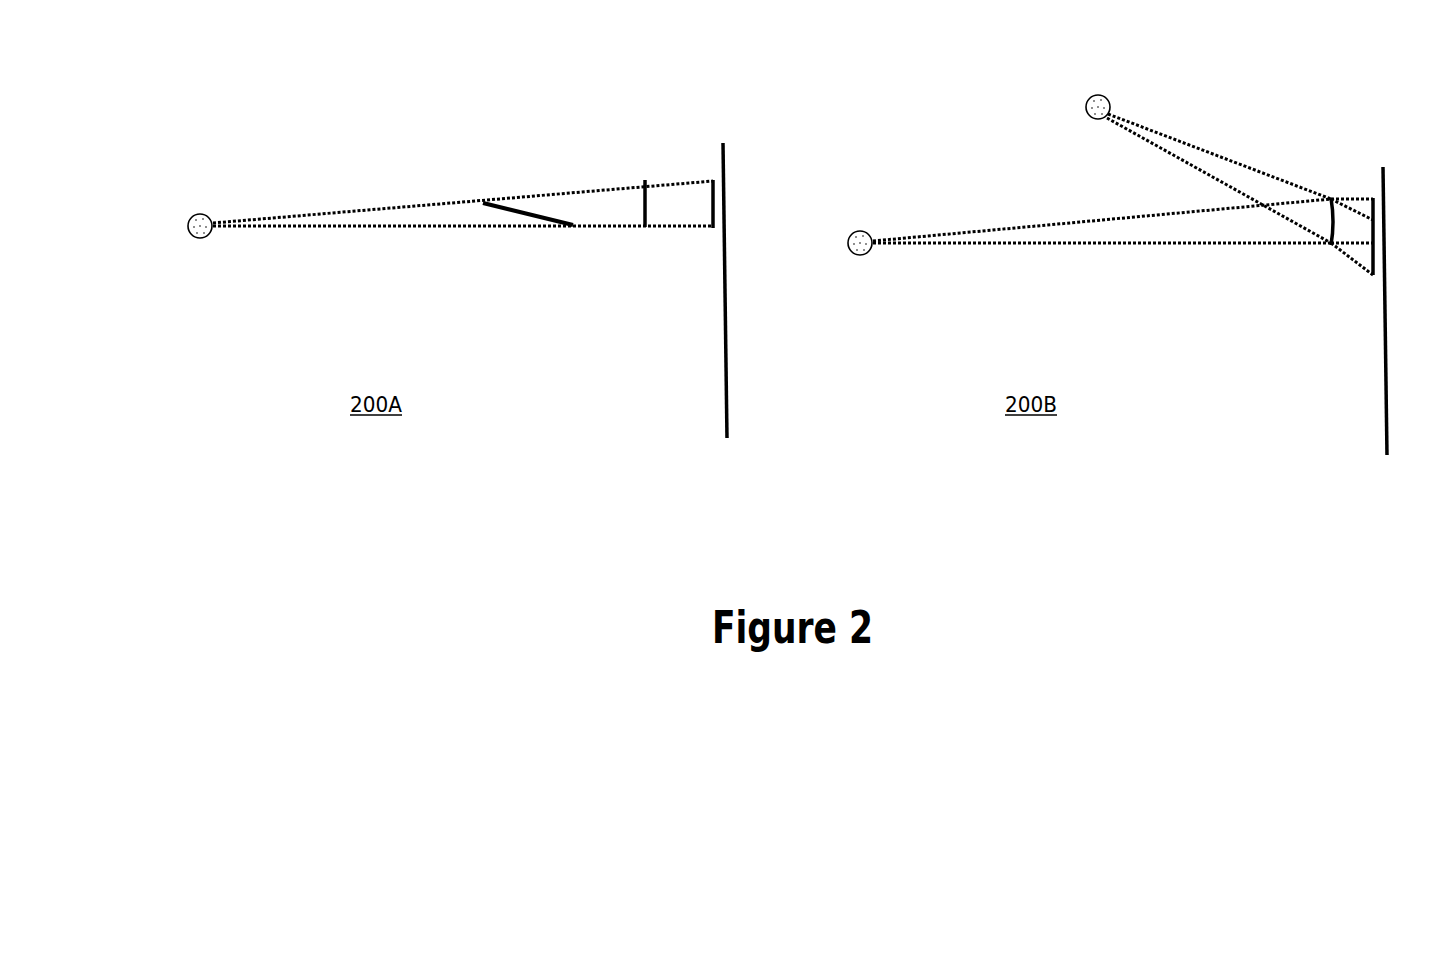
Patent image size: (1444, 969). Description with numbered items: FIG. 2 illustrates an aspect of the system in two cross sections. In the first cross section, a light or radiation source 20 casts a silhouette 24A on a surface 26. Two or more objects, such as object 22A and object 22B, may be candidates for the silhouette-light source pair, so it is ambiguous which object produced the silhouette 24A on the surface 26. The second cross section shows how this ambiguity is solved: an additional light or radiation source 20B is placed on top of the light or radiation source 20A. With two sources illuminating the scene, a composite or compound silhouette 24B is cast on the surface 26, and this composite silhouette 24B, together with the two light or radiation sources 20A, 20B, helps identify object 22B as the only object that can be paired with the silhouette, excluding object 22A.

The light or radiation source 20 is at (200, 213).
The light or radiation source 20A is at (860, 230).
The additional light or radiation source 20B is at (1092, 95).
The object 22A is at (500, 198).
The object 22B is at (645, 178).
The silhouette 24A is at (713, 178).
The composite silhouette 24B is at (1373, 198).
The surface 26 is at (723, 143).